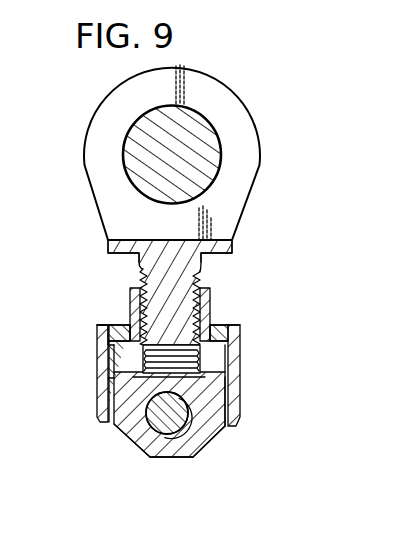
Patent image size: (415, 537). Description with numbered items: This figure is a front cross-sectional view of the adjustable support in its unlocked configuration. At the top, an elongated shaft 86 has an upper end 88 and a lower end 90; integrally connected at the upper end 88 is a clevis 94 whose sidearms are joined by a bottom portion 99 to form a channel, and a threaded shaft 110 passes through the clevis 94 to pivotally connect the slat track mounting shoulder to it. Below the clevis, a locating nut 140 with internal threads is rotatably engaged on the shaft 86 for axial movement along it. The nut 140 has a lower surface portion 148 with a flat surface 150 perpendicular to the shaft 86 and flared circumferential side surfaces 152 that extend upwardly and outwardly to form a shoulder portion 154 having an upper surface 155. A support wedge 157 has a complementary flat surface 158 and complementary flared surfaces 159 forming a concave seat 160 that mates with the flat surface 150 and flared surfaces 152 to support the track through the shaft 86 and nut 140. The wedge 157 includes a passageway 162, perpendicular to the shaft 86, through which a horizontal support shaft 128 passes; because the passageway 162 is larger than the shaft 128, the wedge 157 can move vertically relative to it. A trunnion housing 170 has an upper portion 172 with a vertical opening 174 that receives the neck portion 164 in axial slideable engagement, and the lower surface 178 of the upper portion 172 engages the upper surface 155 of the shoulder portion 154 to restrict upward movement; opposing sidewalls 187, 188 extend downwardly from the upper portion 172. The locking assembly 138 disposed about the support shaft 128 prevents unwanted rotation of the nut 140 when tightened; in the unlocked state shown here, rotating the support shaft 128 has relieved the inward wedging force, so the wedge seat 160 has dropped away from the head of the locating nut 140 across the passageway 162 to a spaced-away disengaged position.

The clevis 94 is at (247, 152).
The threaded shaft 110 is at (198, 135).
The bottom portion 99 is at (122, 238).
The upper end 88 is at (139, 265).
The elongated shaft 86 is at (202, 262).
The lower end 90 is at (201, 320).
The neck portion 164 is at (132, 292).
The locating nut 140 is at (211, 292).
The vertical opening 174 is at (130, 322).
The upper portion 172 is at (112, 322).
The trunnion housing 170 is at (101, 336).
The lower surface 178 is at (110, 356).
The sidewall 188 is at (107, 378).
The shoulder portion 154 is at (228, 350).
The upper surface 155 is at (236, 338).
The sidewall 187 is at (240, 380).
The lower surface portion 148 is at (102, 412).
The flat surface 150 is at (240, 405).
The concave seat 160 is at (226, 385).
The flared circumferential side surfaces 152 is at (105, 380).
The complementary circumferential flared surfaces 159 is at (108, 390).
The complementary flat surface 158 is at (116, 430).
The support wedge 157 is at (128, 440).
The passageway 162 is at (176, 440).
The support shaft 128 is at (189, 440).
The locking assembly 138 is at (111, 457).